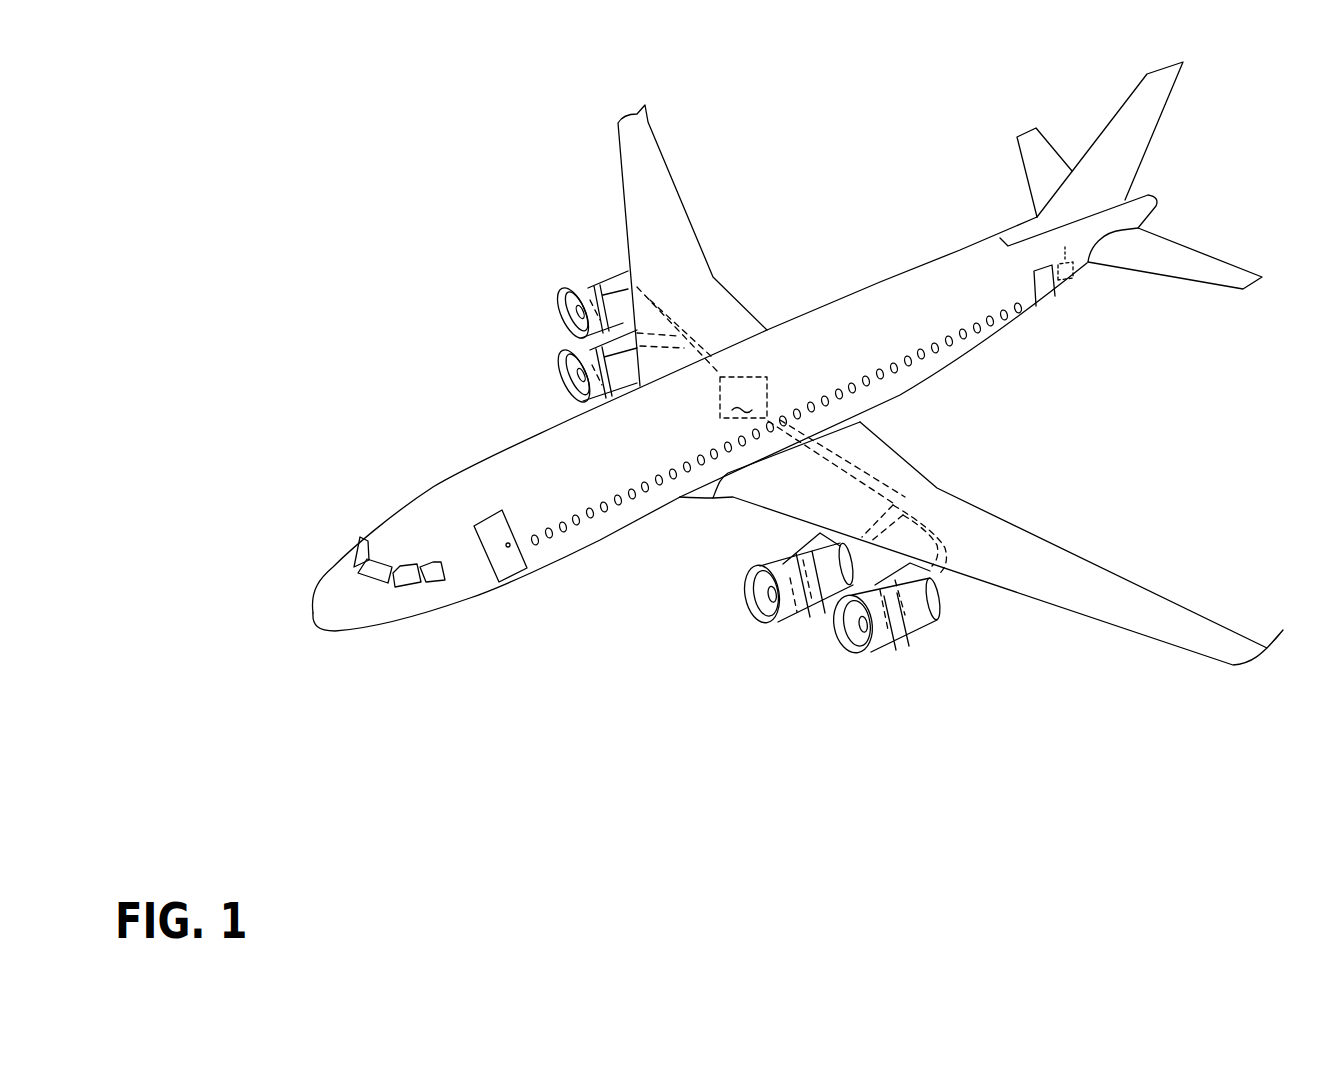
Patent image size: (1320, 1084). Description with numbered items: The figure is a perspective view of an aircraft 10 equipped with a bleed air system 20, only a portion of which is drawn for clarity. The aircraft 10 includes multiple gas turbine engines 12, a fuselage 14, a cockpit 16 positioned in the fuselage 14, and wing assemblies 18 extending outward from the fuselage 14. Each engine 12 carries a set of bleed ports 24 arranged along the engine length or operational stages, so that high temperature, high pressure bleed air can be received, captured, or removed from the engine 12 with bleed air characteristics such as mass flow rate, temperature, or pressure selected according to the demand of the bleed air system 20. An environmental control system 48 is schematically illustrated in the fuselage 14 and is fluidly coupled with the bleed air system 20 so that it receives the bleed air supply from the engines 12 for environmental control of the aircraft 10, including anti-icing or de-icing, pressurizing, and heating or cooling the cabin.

The aircraft 10 is at (334, 473).
The gas turbine engine 12 is at (577, 283).
The fuselage 14 is at (813, 308).
The cockpit 16 is at (425, 557).
The wing assembly 18 is at (637, 155).
The bleed air system 20 is at (905, 497).
The set of bleed ports 24 is at (590, 272).
The environmental control system 48 is at (1098, 305).